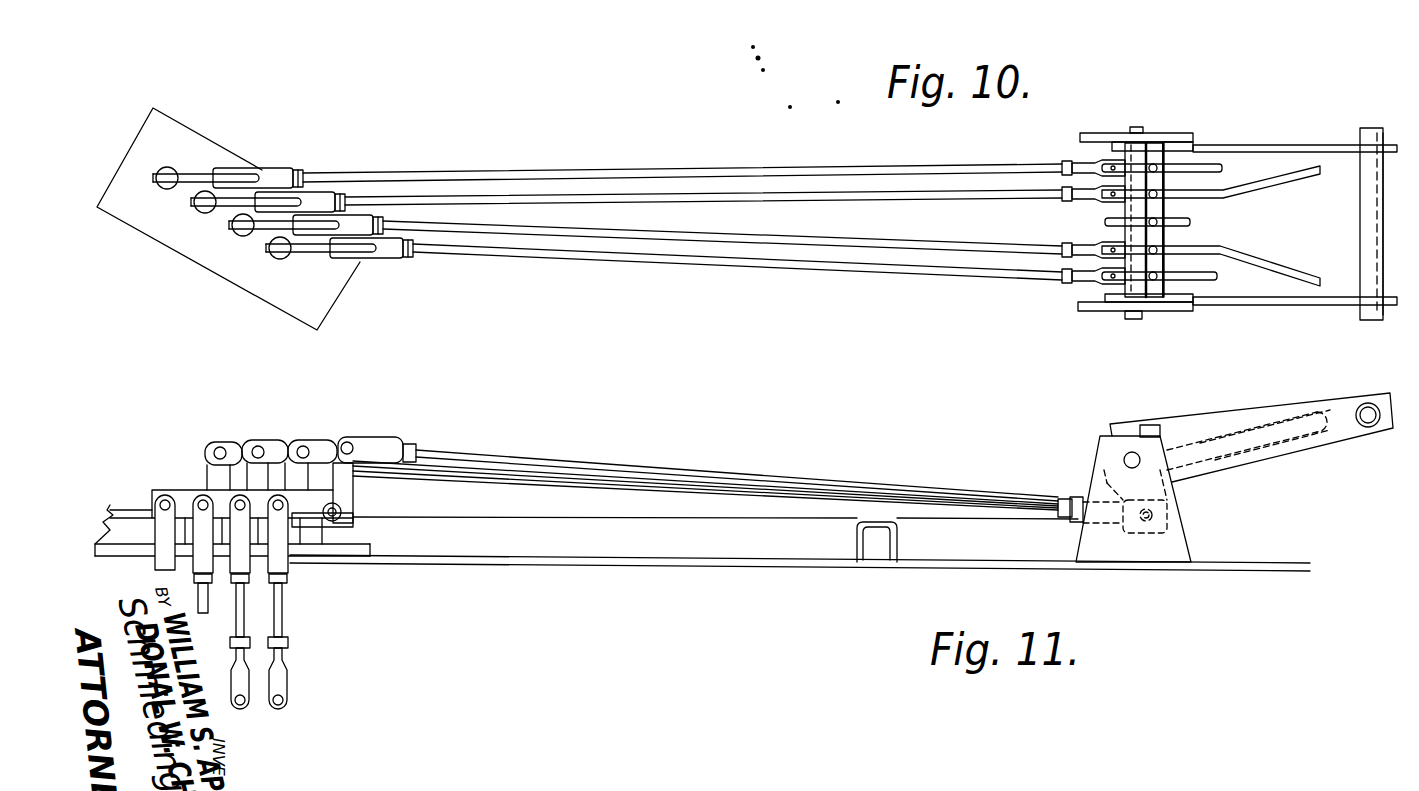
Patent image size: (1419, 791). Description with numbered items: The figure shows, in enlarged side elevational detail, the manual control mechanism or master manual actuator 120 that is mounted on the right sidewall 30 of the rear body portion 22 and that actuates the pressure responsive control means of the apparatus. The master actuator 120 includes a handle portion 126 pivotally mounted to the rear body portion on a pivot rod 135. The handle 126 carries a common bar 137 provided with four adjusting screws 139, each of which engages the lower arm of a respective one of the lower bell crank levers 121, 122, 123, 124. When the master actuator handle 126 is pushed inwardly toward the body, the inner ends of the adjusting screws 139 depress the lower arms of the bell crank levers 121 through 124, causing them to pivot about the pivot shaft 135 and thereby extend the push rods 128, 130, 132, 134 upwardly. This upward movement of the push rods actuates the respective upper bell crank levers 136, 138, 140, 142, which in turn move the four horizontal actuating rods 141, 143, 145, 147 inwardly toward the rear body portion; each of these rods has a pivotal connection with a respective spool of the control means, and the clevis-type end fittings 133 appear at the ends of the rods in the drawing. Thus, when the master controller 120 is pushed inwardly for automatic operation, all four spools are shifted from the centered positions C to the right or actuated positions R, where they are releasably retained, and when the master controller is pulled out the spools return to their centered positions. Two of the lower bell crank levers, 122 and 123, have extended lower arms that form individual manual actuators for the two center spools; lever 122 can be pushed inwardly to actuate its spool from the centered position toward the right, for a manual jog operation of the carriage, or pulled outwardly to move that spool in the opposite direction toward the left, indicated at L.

In FIG. 10, the master manual actuator 120 is at (1340, 142).
In FIG. 11, the master manual actuator 120 is at (1323, 455).
In FIG. 10, the bell crank lever 121 is at (1207, 283).
In FIG. 10, the bell crank lever 122 is at (1290, 273).
In FIG. 10, the bell crank lever 123 is at (1277, 170).
In FIG. 10, the bell crank lever 124 is at (1207, 165).
In FIG. 10, the handle portion 126 is at (1385, 278).
In FIG. 11, the handle portion 126 is at (1373, 430).
In FIG. 10, the push rod 128 is at (773, 263).
In FIG. 11, the push rod 128 is at (553, 463).
In FIG. 10, the push rod 130 is at (622, 233).
In FIG. 10, the push rod 132 is at (707, 197).
In FIG. 10, the push rod 134 is at (577, 172).
In FIG. 10, the clevis 133 is at (235, 168).
In FIG. 11, the clevis 133 is at (160, 527).
In FIG. 11, the pivot rod 135 is at (1122, 458).
In FIG. 11, the upper bell crank lever 136 is at (347, 487).
In FIG. 10, the common bar 137 is at (1153, 160).
In FIG. 11, the upper bell crank lever 138 is at (300, 480).
In FIG. 10, the adjusting screw 139 is at (1172, 240).
In FIG. 11, the adjusting screw 139 is at (1147, 423).
In FIG. 11, the upper bell crank lever 140 is at (255, 477).
In FIG. 11, the horizontal actuating rod 141 is at (277, 627).
In FIG. 11, the upper bell crank lever 142 is at (205, 468).
In FIG. 11, the horizontal actuating rod 143 is at (240, 622).
In FIG. 11, the horizontal actuating rod 145 is at (208, 602).
In FIG. 11, the horizontal actuating rod 147 is at (160, 570).
In FIG. 11, the rear body portion 22 is at (647, 537).
In FIG. 11, the right sidewall 30 is at (1227, 560).
In FIG. 11, the centered position C is at (1297, 410).
In FIG. 11, the actuated position R is at (1327, 398).
In FIG. 11, the link L is at (1288, 447).